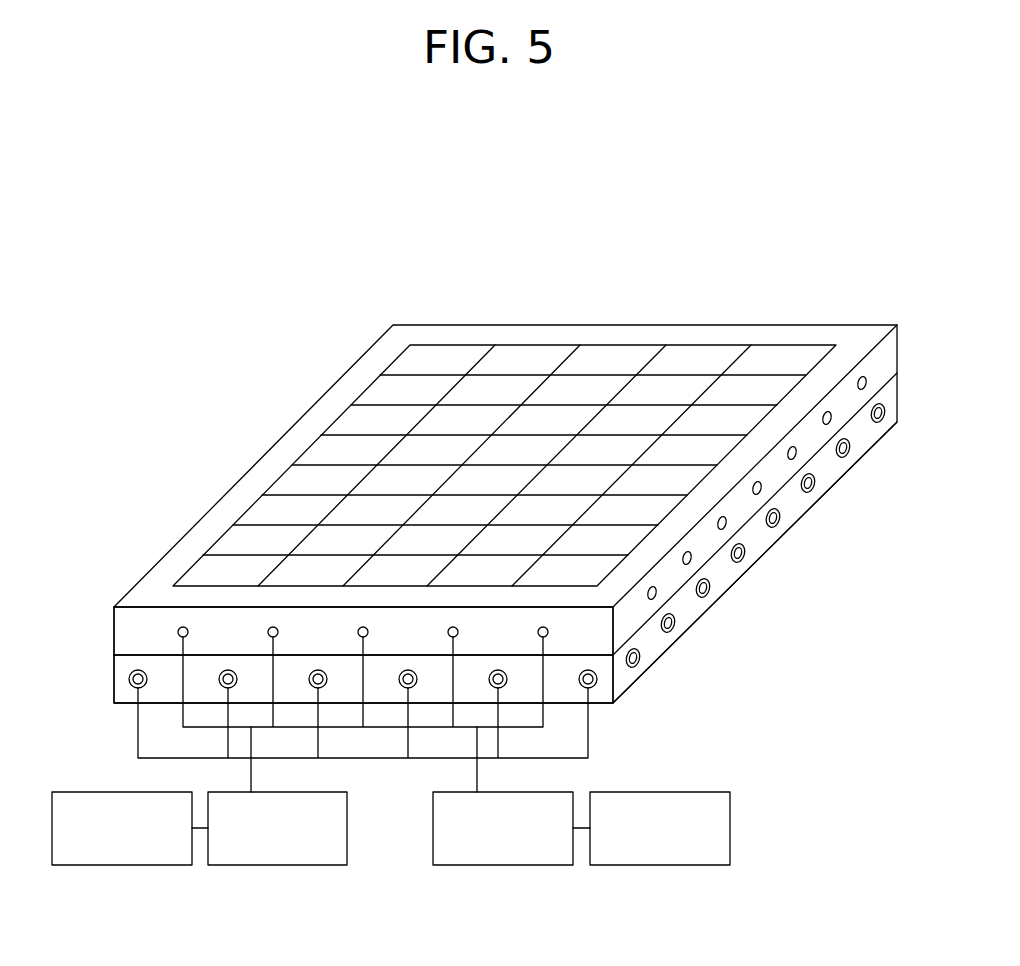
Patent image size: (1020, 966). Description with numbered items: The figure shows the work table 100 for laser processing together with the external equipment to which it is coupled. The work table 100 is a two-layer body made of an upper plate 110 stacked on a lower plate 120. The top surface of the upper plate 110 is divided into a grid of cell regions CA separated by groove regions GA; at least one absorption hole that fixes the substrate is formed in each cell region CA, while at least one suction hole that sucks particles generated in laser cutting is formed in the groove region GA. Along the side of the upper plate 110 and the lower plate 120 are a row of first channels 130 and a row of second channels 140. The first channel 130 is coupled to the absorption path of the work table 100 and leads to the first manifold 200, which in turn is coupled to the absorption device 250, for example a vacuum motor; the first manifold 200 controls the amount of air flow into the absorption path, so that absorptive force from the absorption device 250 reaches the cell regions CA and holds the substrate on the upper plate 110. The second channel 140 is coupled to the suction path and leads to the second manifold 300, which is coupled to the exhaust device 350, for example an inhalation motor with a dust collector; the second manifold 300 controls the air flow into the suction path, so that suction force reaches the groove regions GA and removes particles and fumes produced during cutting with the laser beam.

The work table for laser processing 100 is at (471, 503).
The upper plate 110 is at (118, 631).
The lower plate 120 is at (118, 666).
The first channel 130 is at (182, 627).
The second channel 140 is at (130, 683).
The cell region CA is at (348, 425).
The groove region GA is at (277, 480).
The first manifold 200 is at (278, 866).
The absorption device 250 is at (122, 866).
The second manifold 300 is at (503, 866).
The exhaust device 350 is at (660, 866).